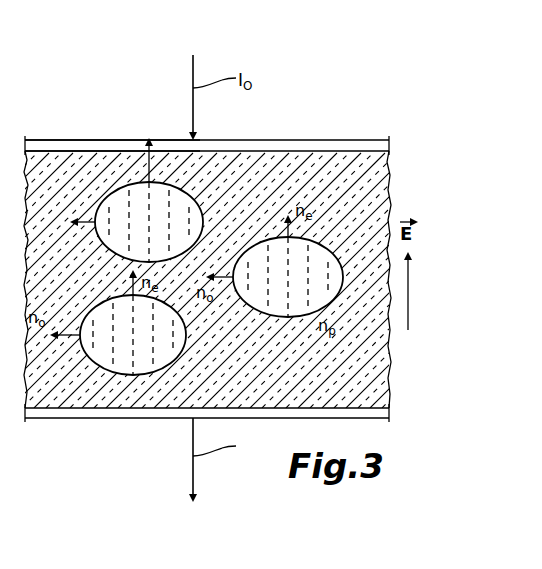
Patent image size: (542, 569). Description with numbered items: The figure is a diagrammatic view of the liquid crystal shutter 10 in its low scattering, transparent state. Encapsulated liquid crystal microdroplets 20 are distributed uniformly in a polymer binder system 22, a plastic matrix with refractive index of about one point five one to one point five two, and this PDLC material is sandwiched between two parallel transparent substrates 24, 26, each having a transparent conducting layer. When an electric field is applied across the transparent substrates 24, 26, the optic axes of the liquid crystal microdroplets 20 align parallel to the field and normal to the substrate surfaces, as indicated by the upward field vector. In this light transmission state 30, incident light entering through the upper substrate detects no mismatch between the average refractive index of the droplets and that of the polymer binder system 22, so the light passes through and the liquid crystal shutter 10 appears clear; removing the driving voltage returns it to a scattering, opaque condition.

The liquid crystal shutter 10 is at (271, 250).
The encapsulated liquid crystal microdroplets 20 is at (112, 198).
The polymer binder system 22 is at (346, 151).
The transparent substrate 24 is at (52, 146).
The transparent substrate 26 is at (52, 419).
The light transmission state 30 is at (192, 463).